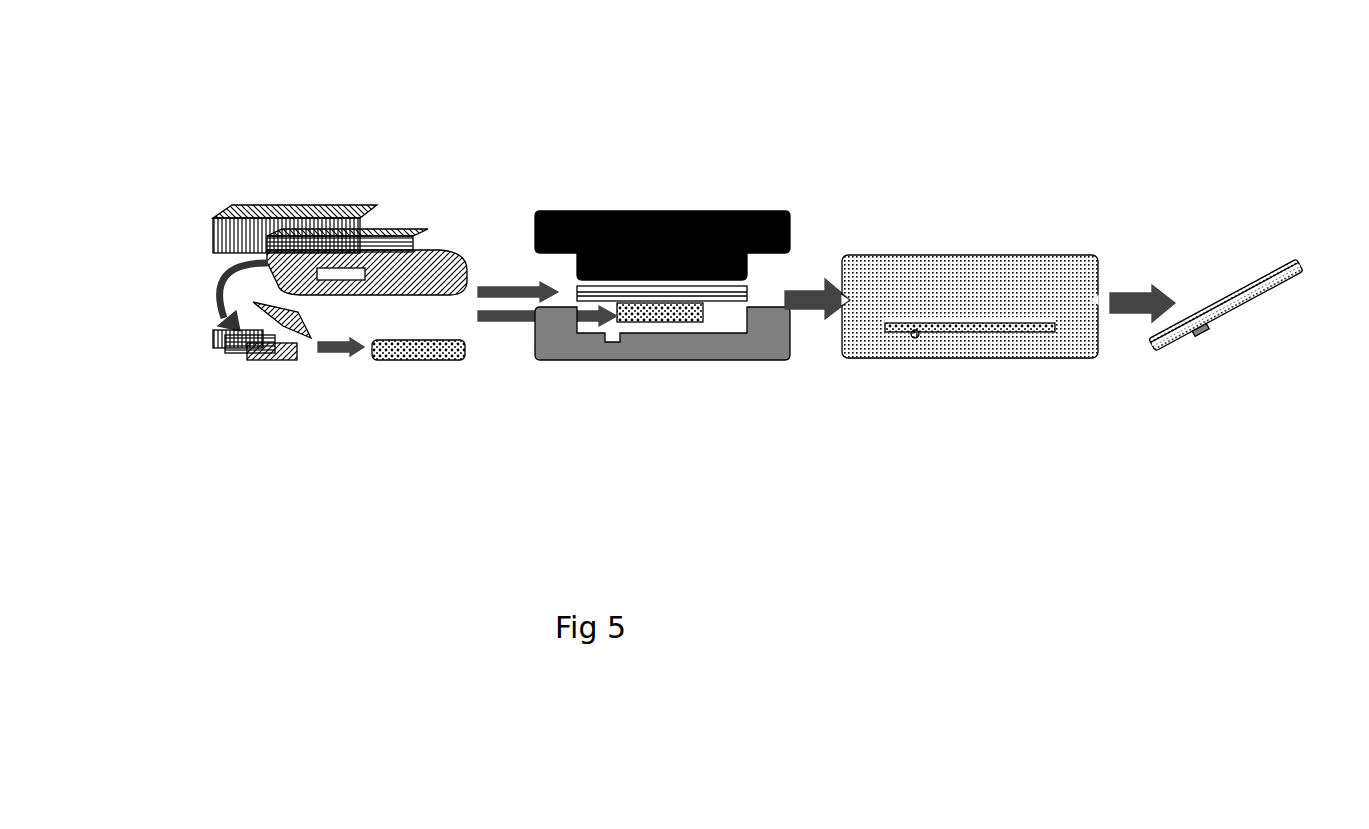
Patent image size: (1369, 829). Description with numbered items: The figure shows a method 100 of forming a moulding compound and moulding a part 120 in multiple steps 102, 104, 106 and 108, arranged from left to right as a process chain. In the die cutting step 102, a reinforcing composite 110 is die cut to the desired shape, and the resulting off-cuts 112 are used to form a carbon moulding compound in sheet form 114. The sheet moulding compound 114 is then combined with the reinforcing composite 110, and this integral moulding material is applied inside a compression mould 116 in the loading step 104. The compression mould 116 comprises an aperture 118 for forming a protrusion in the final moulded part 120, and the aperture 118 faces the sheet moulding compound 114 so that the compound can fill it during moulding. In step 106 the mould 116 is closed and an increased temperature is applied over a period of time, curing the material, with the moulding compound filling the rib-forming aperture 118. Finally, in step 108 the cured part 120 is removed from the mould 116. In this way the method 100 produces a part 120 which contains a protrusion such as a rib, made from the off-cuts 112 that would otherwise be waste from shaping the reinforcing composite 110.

The method of forming a moulding compound 100 is at (473, 143).
The die cutting step 102 is at (340, 343).
The mould loading step 104 is at (584, 381).
The mould closure and curing step 106 is at (941, 351).
The part removal step 108 is at (1206, 369).
The reinforcing composite 110 is at (590, 292).
The off-cuts 112 is at (227, 357).
The carbon moulding compound in sheet form 114 is at (405, 360).
The compression mould 116 is at (863, 250).
The aperture 118 is at (643, 372).
The part 120 is at (1228, 282).